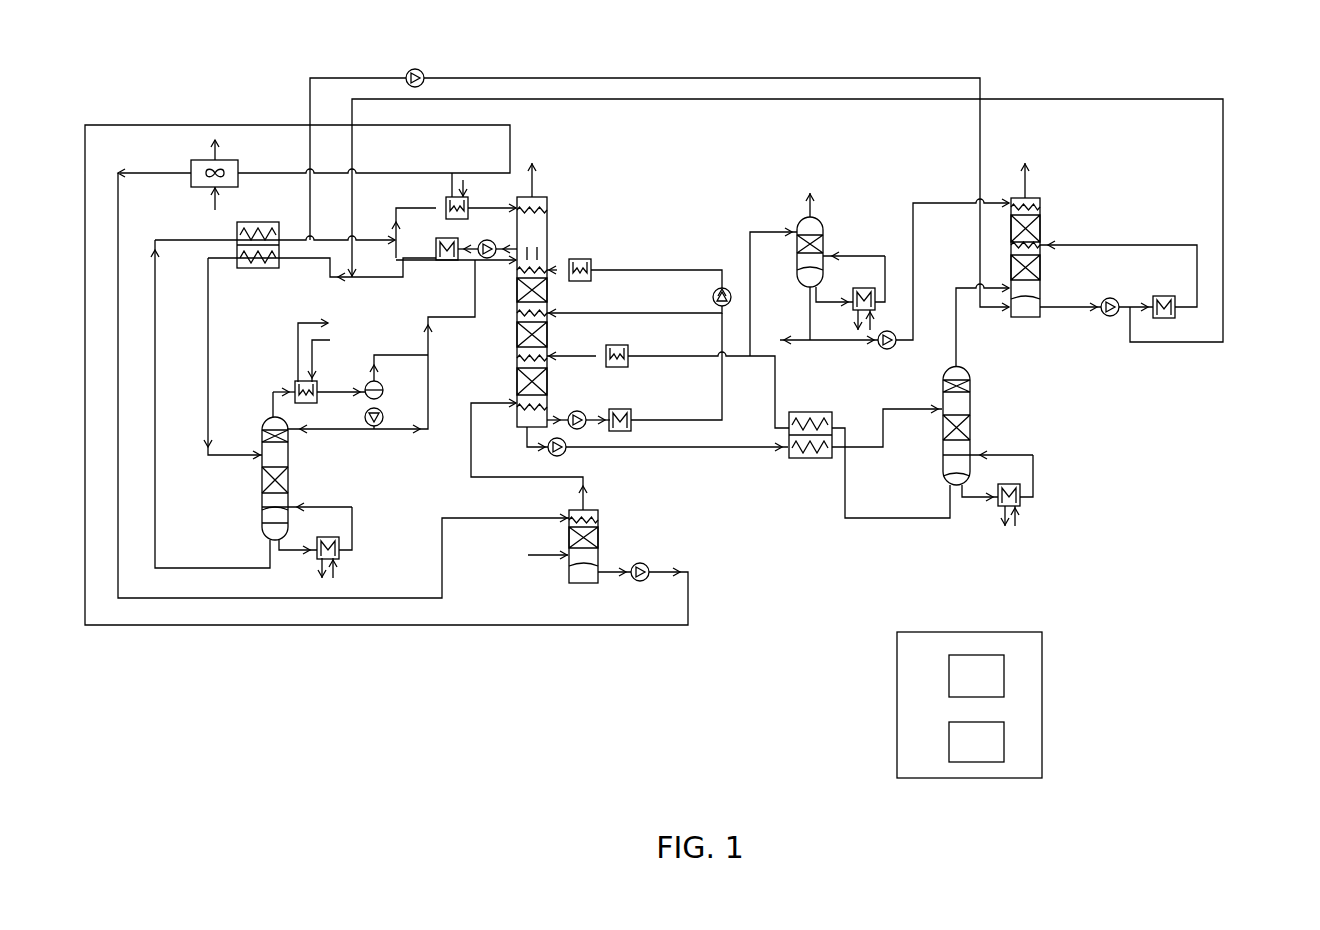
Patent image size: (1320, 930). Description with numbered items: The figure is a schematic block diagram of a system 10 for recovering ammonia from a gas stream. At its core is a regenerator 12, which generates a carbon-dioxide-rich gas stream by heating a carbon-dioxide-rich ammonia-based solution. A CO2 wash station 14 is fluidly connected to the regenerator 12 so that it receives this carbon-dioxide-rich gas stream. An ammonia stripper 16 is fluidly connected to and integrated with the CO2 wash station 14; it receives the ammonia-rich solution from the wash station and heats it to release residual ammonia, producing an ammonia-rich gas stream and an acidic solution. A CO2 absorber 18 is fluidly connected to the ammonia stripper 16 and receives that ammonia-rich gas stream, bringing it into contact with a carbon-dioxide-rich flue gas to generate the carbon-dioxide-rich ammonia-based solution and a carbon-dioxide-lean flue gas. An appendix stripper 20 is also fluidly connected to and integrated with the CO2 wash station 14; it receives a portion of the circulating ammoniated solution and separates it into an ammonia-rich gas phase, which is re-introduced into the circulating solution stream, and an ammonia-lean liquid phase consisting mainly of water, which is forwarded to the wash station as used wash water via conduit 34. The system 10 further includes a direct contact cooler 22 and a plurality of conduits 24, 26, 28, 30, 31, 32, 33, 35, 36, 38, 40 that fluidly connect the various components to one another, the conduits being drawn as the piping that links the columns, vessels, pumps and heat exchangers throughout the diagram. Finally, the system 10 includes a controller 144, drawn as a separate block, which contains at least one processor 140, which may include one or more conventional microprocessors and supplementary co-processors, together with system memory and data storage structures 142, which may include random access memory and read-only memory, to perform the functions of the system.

The system 10 is at (255, 88).
The regenerator 12 is at (978, 381).
The CO2 wash station 14 is at (1045, 188).
The ammonia stripper 16 is at (260, 410).
The CO2 absorber 18 is at (557, 203).
The appendix stripper 20 is at (826, 208).
The direct contact cooler 22 is at (606, 533).
The conduit 24 is at (660, 78).
The conduit 26 is at (470, 453).
The conduit 28 is at (471, 278).
The conduit 30 is at (726, 98).
The conduit 31 is at (398, 212).
The conduit 32 is at (956, 280).
The conduit 33 is at (400, 268).
The conduit 34 is at (942, 195).
The conduit 35 is at (1064, 250).
The conduit 36 is at (910, 400).
The conduit 38 is at (778, 384).
The conduit 40 is at (528, 555).
The processor 140 is at (1004, 676).
The memory 142 is at (1004, 742).
The controller 144 is at (1042, 644).